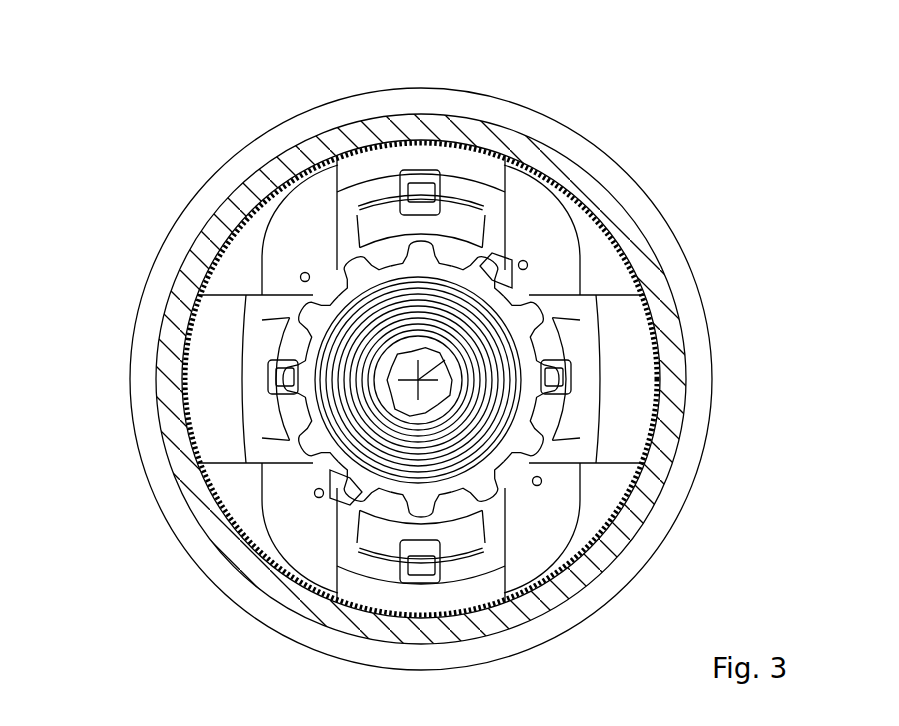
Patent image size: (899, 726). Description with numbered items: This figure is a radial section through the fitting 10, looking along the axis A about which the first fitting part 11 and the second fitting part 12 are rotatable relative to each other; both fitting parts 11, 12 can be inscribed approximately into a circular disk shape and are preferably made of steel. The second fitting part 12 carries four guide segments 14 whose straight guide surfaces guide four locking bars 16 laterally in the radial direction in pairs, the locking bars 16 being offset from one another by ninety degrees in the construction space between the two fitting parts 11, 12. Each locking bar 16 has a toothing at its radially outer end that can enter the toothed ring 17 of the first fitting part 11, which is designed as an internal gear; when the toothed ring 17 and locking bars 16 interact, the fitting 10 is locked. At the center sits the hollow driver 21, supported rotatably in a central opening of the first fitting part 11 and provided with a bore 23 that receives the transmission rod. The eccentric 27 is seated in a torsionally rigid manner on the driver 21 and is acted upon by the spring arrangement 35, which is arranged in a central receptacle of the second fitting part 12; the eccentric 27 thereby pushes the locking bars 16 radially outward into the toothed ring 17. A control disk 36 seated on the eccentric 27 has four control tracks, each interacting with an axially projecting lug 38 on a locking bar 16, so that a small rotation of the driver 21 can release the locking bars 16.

The fitting 10 is at (615, 110).
The first fitting part 11 is at (163, 297).
The second fitting part 12 is at (553, 117).
The guide segment 14 is at (232, 253).
The locking bar 16 is at (410, 163).
The toothed ring 17 is at (198, 465).
The driver 21 is at (350, 478).
The bore 23 is at (507, 313).
The eccentric 27 is at (290, 325).
The spring arrangement 35 is at (530, 485).
The control disk 36 is at (540, 440).
The lug 38 is at (400, 177).
The axis A is at (522, 427).